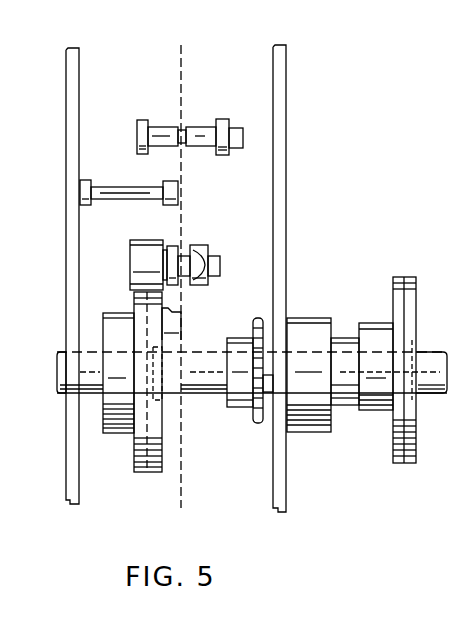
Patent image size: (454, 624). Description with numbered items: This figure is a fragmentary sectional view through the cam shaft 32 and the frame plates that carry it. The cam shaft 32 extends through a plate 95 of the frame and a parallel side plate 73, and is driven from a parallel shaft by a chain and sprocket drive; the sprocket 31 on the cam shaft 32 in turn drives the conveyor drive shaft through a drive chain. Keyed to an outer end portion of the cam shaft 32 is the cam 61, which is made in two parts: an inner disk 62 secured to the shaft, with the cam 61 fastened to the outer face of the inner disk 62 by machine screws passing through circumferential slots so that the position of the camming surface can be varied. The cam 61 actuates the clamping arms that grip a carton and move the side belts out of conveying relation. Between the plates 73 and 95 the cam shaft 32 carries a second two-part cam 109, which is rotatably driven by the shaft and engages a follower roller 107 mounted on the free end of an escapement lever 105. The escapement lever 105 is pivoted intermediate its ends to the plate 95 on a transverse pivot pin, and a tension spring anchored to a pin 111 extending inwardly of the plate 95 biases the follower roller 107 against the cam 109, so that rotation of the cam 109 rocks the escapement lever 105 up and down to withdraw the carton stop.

The plate 95 is at (66, 286).
The side plate 73 is at (287, 193).
The pin 111 is at (111, 184).
The follower roller 107 is at (150, 238).
The escapement lever 105 is at (188, 242).
The cam 109 is at (148, 473).
The cam shaft 32 is at (198, 352).
The sprocket 31 is at (257, 318).
The inner disk 62 is at (392, 445).
The cam 61 is at (413, 465).